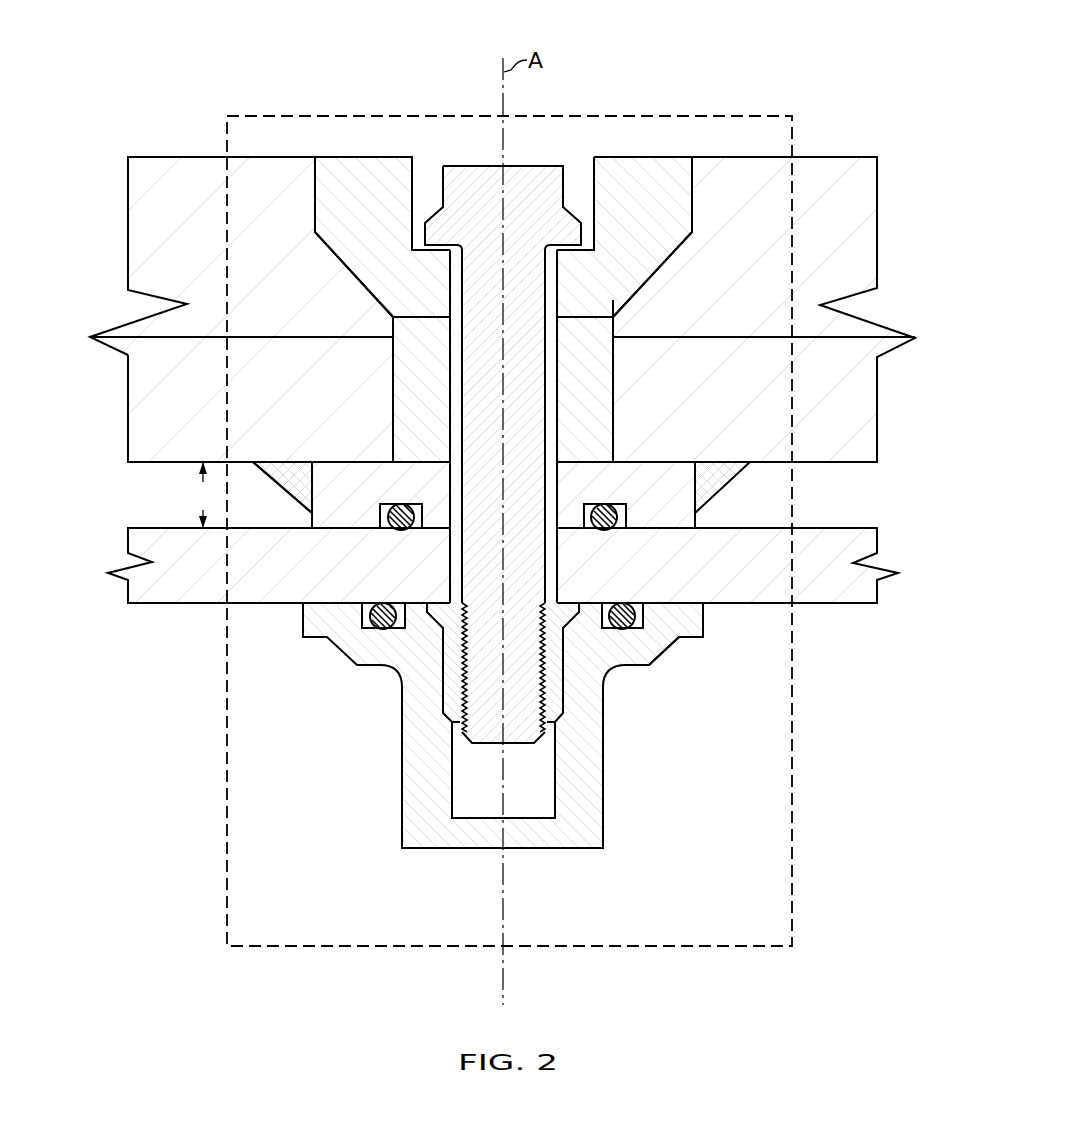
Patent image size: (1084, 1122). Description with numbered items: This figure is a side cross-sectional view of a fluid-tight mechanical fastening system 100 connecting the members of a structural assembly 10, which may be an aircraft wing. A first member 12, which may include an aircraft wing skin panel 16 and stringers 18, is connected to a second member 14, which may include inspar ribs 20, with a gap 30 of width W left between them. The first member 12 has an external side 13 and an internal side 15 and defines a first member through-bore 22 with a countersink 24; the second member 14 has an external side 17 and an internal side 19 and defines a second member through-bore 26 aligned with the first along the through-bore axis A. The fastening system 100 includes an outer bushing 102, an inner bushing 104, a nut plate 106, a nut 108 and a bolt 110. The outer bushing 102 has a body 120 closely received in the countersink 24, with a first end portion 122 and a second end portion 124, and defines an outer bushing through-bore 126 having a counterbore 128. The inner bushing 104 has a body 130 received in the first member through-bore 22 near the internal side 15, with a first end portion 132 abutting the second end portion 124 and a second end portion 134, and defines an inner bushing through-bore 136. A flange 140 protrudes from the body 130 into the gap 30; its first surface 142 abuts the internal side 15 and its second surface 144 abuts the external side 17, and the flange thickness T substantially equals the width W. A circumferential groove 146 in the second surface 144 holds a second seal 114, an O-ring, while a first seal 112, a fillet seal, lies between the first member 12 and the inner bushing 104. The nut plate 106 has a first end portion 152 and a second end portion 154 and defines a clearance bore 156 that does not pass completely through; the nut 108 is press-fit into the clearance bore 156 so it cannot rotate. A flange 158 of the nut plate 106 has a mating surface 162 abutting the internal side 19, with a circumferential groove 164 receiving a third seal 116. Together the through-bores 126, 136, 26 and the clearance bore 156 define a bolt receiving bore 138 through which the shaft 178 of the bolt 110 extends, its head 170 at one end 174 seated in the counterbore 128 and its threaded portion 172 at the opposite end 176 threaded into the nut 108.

The structural assembly 10 is at (797, 80).
The first member 12 is at (877, 157).
The external side 13 is at (745, 157).
The second member 14 is at (877, 604).
The internal side 15 is at (832, 463).
The aircraft wing skin panel 16 is at (880, 246).
The external side 17 is at (800, 527).
The stringers 18 is at (878, 413).
The internal side 19 is at (812, 604).
The inspar ribs 20 is at (880, 562).
The first member through-bore 22 is at (610, 361).
The countersink 24 is at (655, 263).
The second member through-bore 26 is at (553, 578).
The gap 30 is at (160, 500).
The fluid-tight mechanical fastening system 100 is at (641, 115).
The outer bushing 102 is at (326, 237).
The inner bushing 104 is at (400, 385).
The nut plate 106 is at (604, 727).
The nut 108 is at (557, 670).
The bolt 110 is at (457, 347).
The first seal 112 is at (293, 493).
The second seal 114 is at (405, 524).
The third seal 116 is at (386, 628).
The body 120 is at (359, 271).
The first end portion 122 is at (702, 156).
The second end portion 124 is at (632, 317).
The outer bushing through-bore 126 is at (450, 264).
The counterbore 128 is at (415, 203).
The body 130 is at (608, 414).
The first end portion 132 is at (620, 342).
The second end portion 134 is at (604, 556).
The inner bushing through-bore 136 is at (553, 421).
The bolt receiving bore 138 is at (470, 632).
The flange 140 is at (372, 468).
The first surface 142 is at (343, 461).
The second surface 144 is at (346, 531).
The circumferential groove 146 is at (389, 505).
The first end portion 152 is at (278, 621).
The second end portion 154 is at (361, 891).
The clearance bore 156 is at (554, 775).
The flange 158 is at (656, 643).
The mating surface 162 is at (660, 602).
The circumferential groove 164 is at (645, 622).
The head 170 is at (558, 166).
The threaded portion 172 is at (471, 738).
The end 174 is at (525, 154).
The end 176 is at (478, 753).
The shaft 178 is at (534, 480).